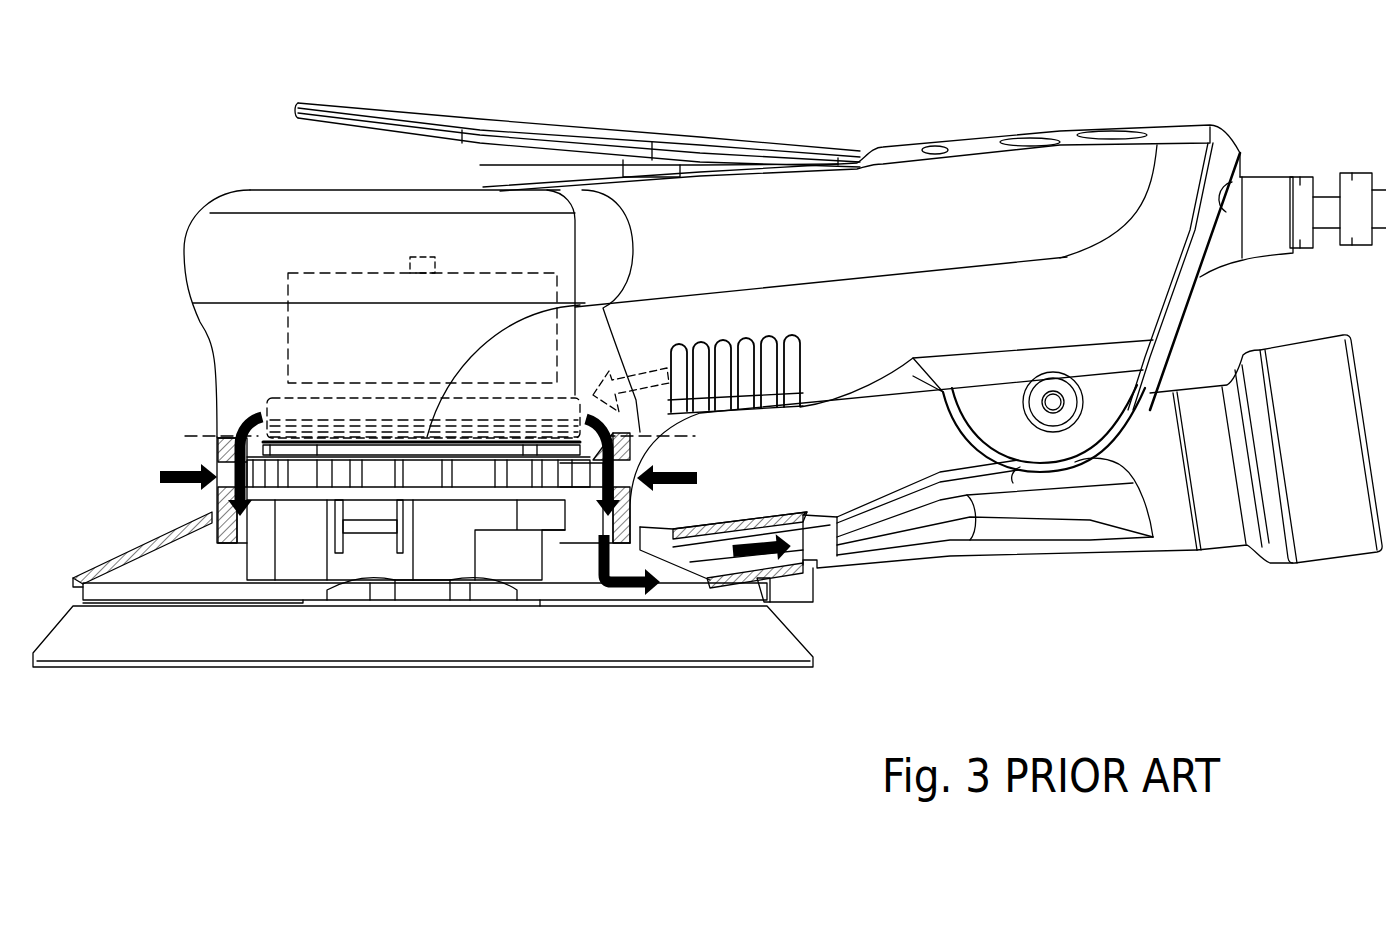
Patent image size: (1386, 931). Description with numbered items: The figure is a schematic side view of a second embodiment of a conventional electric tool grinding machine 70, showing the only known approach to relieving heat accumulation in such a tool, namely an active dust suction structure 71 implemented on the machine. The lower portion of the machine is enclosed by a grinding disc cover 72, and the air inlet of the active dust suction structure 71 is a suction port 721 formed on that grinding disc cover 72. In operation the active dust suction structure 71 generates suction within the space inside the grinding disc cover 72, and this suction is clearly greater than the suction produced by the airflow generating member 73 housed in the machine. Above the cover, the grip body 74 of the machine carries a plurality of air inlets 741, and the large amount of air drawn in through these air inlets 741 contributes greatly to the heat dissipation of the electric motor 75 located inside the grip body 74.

The electric tool grinding machine 70 is at (889, 54).
The active dust suction structure 71 is at (1027, 550).
The grinding disc cover 72 is at (130, 548).
The suction port 721 is at (690, 573).
The airflow generating member 73 is at (467, 493).
The grip body 74 is at (223, 200).
The air inlets 741 is at (800, 380).
The electric motor 75 is at (492, 273).